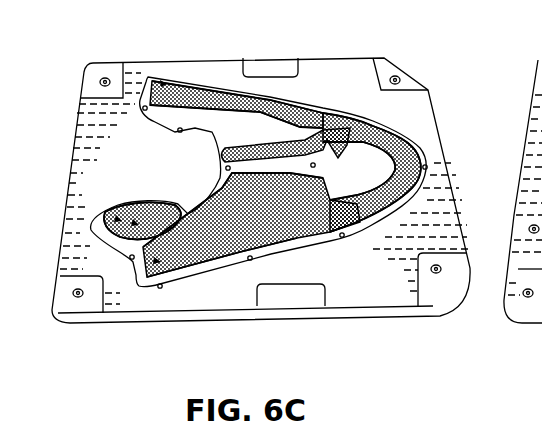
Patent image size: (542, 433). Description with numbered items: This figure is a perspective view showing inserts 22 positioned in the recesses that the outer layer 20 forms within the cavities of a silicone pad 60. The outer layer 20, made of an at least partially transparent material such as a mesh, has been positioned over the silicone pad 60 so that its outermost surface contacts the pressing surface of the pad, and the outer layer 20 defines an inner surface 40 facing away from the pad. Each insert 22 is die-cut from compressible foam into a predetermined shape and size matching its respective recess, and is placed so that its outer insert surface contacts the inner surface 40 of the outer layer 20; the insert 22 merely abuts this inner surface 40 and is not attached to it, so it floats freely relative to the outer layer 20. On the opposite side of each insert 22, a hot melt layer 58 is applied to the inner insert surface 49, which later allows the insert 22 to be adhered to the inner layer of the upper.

The silicone pad 60 is at (428, 117).
The outer layer 20 is at (215, 128).
The outer layer inner surface 40 is at (264, 205).
The insert 22 is at (192, 92).
The second hot melt layer 58 is at (255, 95).
The inner insert surface 49 is at (160, 83).